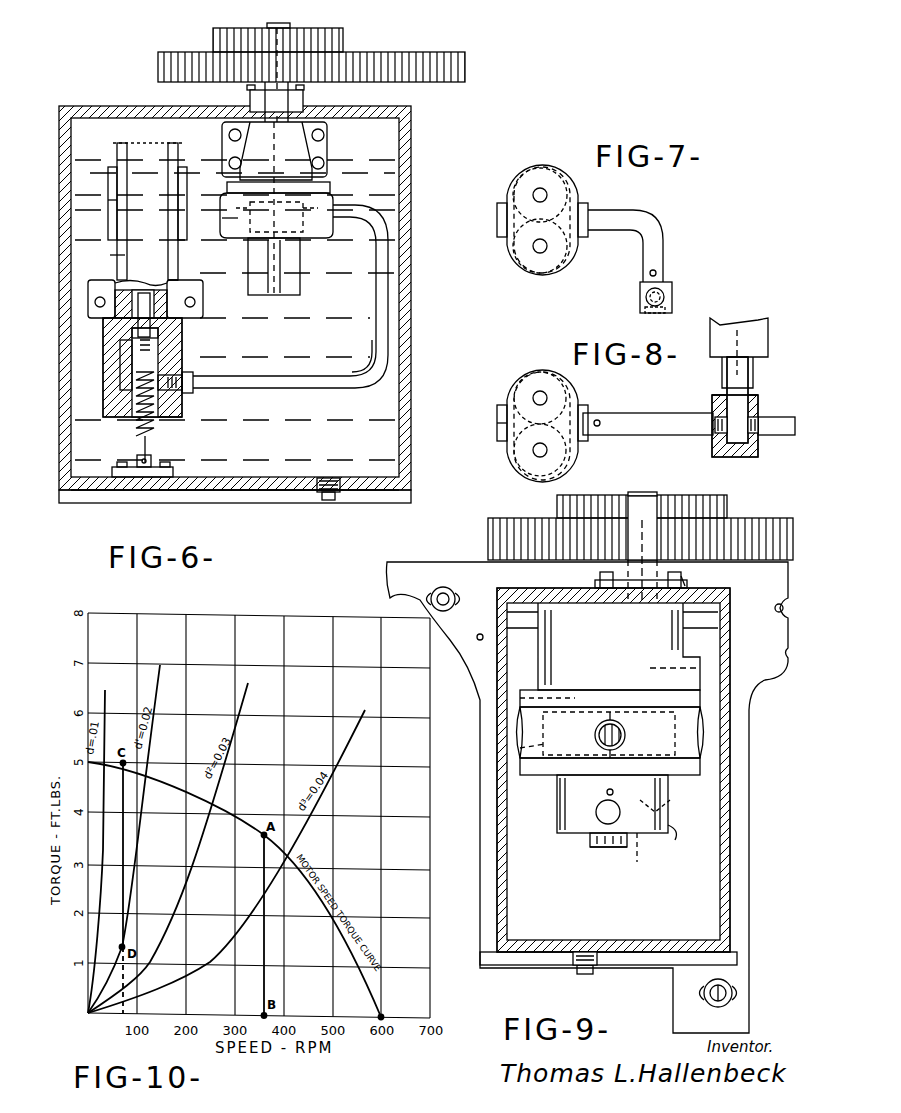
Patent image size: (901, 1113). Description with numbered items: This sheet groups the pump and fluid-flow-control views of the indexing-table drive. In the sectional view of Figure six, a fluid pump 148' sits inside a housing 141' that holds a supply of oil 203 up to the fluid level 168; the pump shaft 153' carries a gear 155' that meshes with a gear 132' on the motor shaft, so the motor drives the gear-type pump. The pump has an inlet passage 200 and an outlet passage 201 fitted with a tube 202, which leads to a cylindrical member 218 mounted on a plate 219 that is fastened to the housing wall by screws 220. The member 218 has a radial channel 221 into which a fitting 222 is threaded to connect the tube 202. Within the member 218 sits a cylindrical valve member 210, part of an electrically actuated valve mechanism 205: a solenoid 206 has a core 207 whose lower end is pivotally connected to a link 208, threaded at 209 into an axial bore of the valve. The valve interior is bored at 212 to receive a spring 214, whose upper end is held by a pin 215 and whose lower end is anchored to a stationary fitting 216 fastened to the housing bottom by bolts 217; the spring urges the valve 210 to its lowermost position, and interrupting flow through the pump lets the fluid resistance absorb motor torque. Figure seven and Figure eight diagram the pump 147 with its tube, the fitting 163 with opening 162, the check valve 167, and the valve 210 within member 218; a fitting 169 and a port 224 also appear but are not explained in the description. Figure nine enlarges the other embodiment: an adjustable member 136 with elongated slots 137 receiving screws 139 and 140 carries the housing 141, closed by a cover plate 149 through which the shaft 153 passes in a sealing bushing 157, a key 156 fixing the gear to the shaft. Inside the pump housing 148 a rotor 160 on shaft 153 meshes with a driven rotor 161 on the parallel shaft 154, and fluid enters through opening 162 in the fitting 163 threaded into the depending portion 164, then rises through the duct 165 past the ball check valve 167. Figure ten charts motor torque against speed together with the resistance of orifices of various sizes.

In FIG. 6, the gear 132' is at (324, 54).
In FIG. 6, the gear 155' is at (315, 64).
In FIG. 9, the gear 155' is at (616, 539).
In FIG. 6, the pump shaft 153' is at (312, 98).
In FIG. 6, the fluid pump 148' is at (340, 208).
In FIG. 6, the outlet passage 201 is at (330, 207).
In FIG. 6, the fluid passage 200 is at (222, 218).
In FIG. 8, the fluid passage 200 is at (497, 428).
In FIG. 9, the fluid passage 200 is at (597, 729).
In FIG. 6, the tube 202 is at (390, 268).
In FIG. 8, the tube 202 is at (650, 436).
In FIG. 6, the supply of oil 203 is at (375, 392).
In FIG. 6, the housing 141' is at (257, 304).
In FIG. 6, the fluid level 168 is at (115, 165).
In FIG. 9, the fluid level 168 is at (592, 637).
In FIG. 6, the solenoid 206 is at (108, 200).
In FIG. 6, the electrically actuated valve mechanism 205 is at (108, 255).
In FIG. 8, the electrically actuated valve mechanism 205 is at (752, 318).
In FIG. 6, the core 207 is at (88, 290).
In FIG. 6, the screws 220 is at (97, 305).
In FIG. 6, the plate 219 is at (172, 288).
In FIG. 6, the link 208 is at (152, 298).
In FIG. 6, the threaded portion 209 is at (152, 325).
In FIG. 6, the cylindrical valve member 210 is at (120, 385).
In FIG. 8, the cylindrical valve member 210 is at (730, 392).
In FIG. 6, the bore 212 is at (125, 372).
In FIG. 6, the pin 215 is at (136, 355).
In FIG. 6, the radial channel 221 is at (160, 378).
In FIG. 6, the outlet port 224 is at (185, 383).
In FIG. 8, the outlet port 224 is at (600, 420).
In FIG. 6, the fitting 222 is at (190, 395).
In FIG. 6, the cylindrical member 218 is at (175, 410).
In FIG. 8, the cylindrical member 218 is at (752, 395).
In FIG. 6, the spring 214 is at (143, 435).
In FIG. 6, the stationary fitting 216 is at (152, 460).
In FIG. 6, the bolts 217 is at (120, 468).
In FIG. 7, the fluid pump 147 is at (549, 162).
In FIG. 8, the fluid pump 147 is at (580, 376).
In FIG. 9, the fluid pump 147 is at (706, 751).
In FIG. 7, the pump outlet pipe 169 is at (657, 272).
In FIG. 9, the pump outlet pipe 169 is at (605, 792).
In FIG. 7, the check valve 167 is at (672, 290).
In FIG. 9, the check valve 167 is at (575, 836).
In FIG. 7, the fitting 163 is at (640, 297).
In FIG. 9, the fitting 163 is at (603, 848).
In FIG. 7, the opening 162 is at (652, 318).
In FIG. 9, the opening 162 is at (633, 858).
In FIG. 9, the member 136 is at (440, 570).
In FIG. 9, the elongated slots 137 is at (432, 592).
In FIG. 9, the screw 139 is at (452, 592).
In FIG. 9, the screw 140 is at (718, 985).
In FIG. 9, the key 156 is at (700, 517).
In FIG. 9, the cover plate 149 is at (565, 592).
In FIG. 9, the bushing 157 is at (683, 582).
In FIG. 9, the housing 141 is at (634, 781).
In FIG. 9, the shaft 153 is at (708, 659).
In FIG. 9, the shaft 154 is at (535, 703).
In FIG. 9, the pump housing 148 is at (653, 730).
In FIG. 9, the driven rotor 161 is at (520, 750).
In FIG. 9, the toothed rotor 160 is at (665, 758).
In FIG. 9, the duct 165 is at (575, 796).
In FIG. 9, the depending portion 164 is at (683, 844).